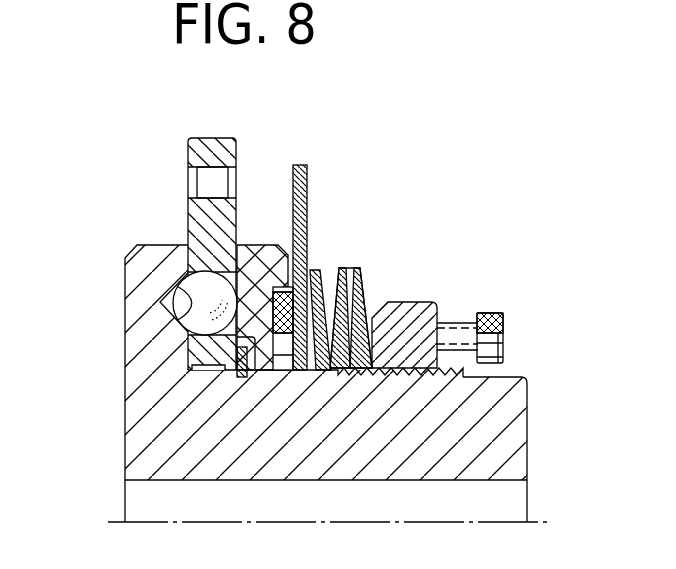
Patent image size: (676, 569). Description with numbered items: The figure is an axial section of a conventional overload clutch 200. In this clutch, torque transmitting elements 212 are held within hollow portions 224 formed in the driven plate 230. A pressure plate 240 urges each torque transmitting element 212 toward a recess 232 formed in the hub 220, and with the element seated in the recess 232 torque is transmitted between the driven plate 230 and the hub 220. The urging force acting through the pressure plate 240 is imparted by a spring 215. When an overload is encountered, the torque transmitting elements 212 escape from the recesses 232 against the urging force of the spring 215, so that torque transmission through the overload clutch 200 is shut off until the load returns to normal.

The overload clutch 200 is at (470, 274).
The torque transmitting element 212 is at (185, 271).
The spring 215 is at (362, 285).
The hub 220 is at (145, 285).
The hollow portion 224 is at (293, 260).
The driven plate 230 is at (215, 140).
The recess 232 is at (177, 325).
The pressure plate 240 is at (265, 257).